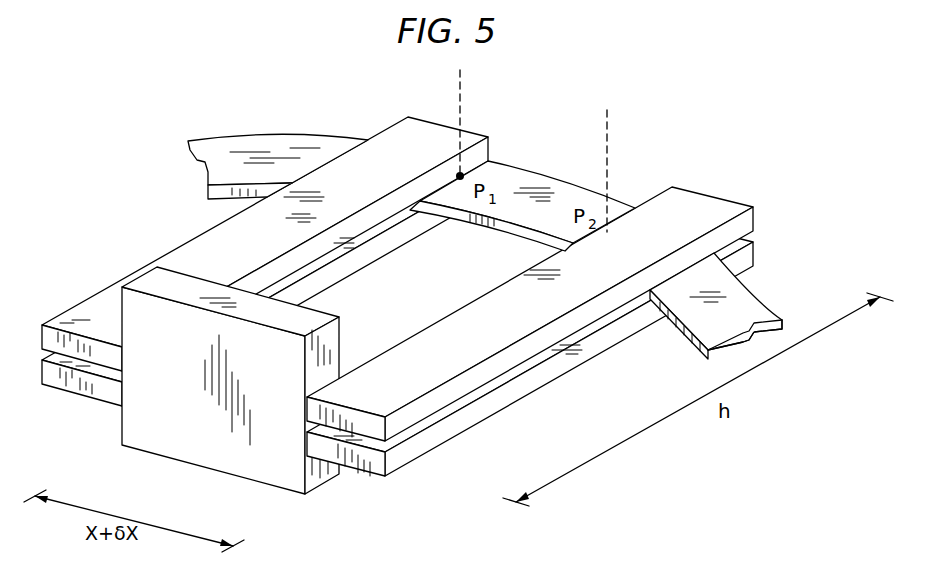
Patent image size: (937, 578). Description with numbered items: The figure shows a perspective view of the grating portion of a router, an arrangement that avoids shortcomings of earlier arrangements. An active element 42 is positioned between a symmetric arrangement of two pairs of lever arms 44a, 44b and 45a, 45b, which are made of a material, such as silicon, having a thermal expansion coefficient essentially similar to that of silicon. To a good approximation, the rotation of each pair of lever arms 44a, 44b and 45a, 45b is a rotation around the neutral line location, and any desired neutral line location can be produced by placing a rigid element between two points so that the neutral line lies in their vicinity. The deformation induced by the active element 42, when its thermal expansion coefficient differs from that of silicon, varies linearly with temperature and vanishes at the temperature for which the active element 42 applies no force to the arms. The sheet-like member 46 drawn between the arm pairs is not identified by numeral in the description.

The active element 42 is at (192, 445).
The lever arm 44a is at (88, 300).
The lever arm 44b is at (85, 382).
The lever arm 45a is at (695, 206).
The lever arm 45b is at (750, 257).
The flexible sheet 46 is at (703, 322).